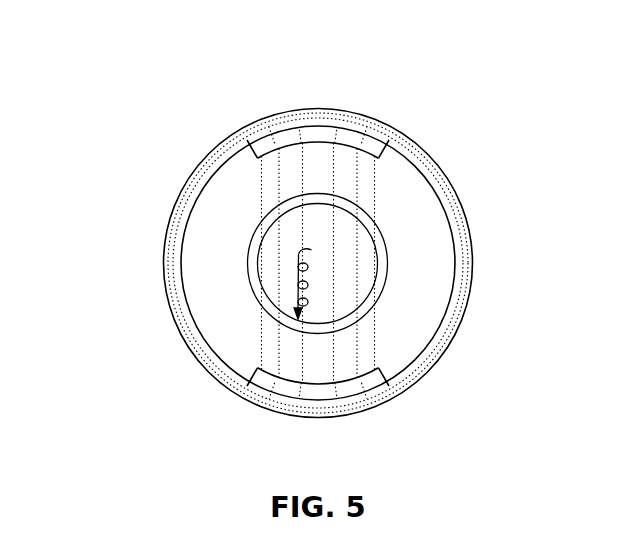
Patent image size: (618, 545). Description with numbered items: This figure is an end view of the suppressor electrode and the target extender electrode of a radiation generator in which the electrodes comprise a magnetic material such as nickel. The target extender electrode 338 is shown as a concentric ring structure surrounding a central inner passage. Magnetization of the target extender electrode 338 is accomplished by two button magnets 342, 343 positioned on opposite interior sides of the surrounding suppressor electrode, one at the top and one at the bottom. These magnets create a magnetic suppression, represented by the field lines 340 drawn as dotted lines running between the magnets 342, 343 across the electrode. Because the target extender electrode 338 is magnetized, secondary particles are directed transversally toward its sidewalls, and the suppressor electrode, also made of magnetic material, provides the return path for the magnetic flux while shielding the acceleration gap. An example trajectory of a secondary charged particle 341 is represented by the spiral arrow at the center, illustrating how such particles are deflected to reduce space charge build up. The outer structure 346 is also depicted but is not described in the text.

The target extender electrode 338 is at (249, 263).
The outer wall liner 346 is at (364, 263).
The magnet 343 is at (345, 89).
The magnet 342 is at (353, 416).
The field lines 340 is at (203, 283).
The secondary charged particle 341 is at (171, 306).